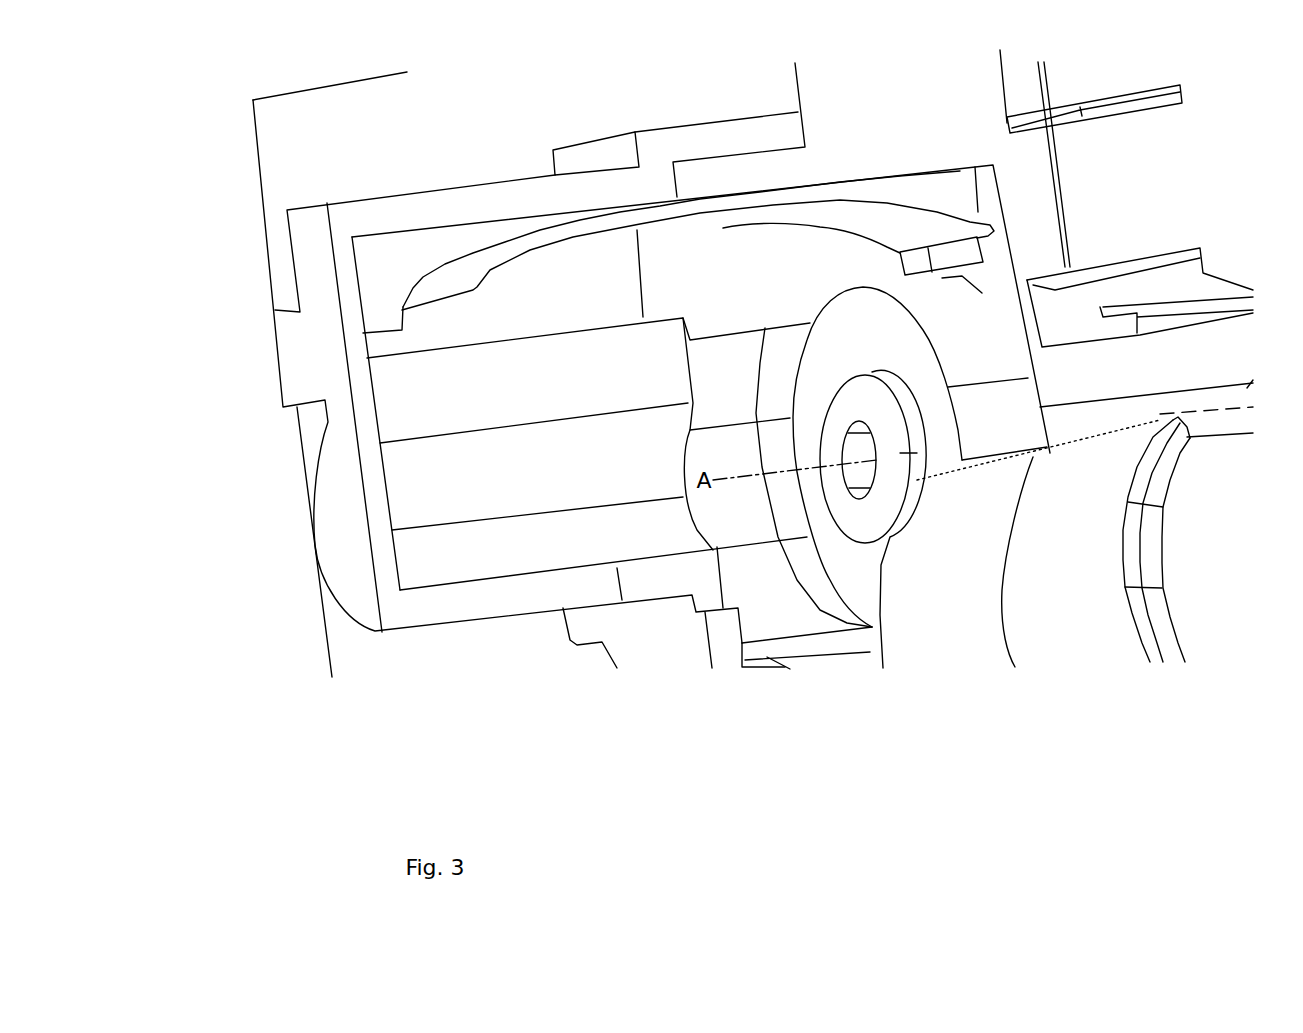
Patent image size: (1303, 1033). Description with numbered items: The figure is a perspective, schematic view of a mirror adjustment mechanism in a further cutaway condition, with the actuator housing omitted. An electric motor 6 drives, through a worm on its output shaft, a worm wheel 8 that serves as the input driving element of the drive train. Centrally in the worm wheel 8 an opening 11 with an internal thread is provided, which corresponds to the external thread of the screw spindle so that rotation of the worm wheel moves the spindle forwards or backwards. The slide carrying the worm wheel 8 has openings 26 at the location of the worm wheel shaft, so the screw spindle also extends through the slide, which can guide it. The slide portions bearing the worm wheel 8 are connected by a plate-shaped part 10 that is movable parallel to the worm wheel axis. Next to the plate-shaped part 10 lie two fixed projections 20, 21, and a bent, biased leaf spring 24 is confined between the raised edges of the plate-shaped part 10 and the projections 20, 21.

The electric motor 6 is at (1075, 568).
The worm wheel 8 is at (1005, 431).
The plate-shaped part 10 is at (308, 358).
The opening 11 is at (860, 482).
The projection 20 is at (378, 267).
The projection 21 is at (963, 253).
The leaf spring 24 is at (840, 213).
The openings 26 is at (470, 556).